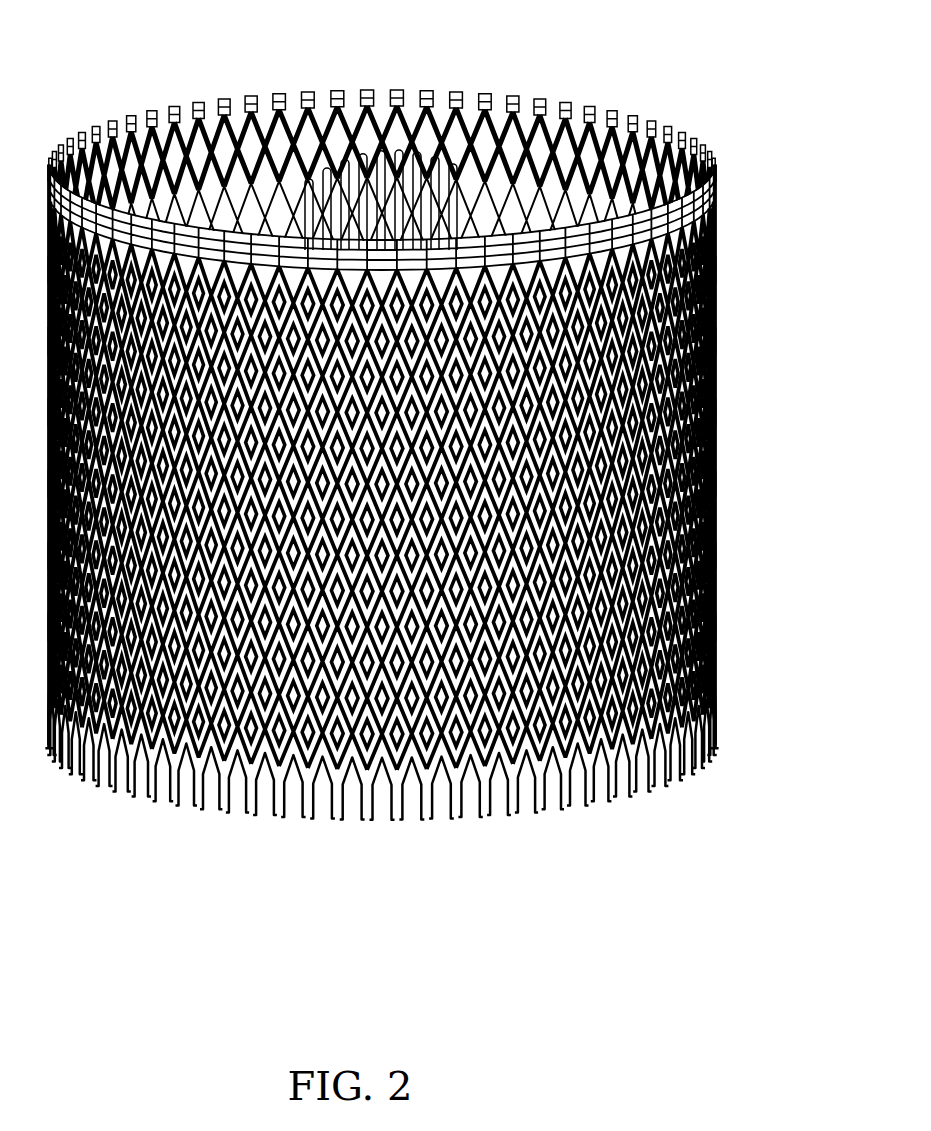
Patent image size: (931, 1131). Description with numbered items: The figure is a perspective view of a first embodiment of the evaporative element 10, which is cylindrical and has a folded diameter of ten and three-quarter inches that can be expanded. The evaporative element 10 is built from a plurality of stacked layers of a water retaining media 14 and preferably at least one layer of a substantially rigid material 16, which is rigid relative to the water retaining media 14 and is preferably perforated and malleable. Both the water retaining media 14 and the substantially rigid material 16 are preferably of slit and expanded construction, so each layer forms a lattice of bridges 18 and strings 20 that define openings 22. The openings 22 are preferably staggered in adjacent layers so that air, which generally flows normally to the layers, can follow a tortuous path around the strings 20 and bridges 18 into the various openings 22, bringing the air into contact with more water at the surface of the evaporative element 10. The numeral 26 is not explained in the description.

The evaporative element 10 is at (638, 102).
The water retaining media 14 is at (228, 100).
The substantially rigid material 16 is at (687, 292).
The bridges 18 is at (607, 398).
The strings 20 is at (582, 500).
The openings 22 is at (582, 640).
The inner member 26 is at (388, 150).